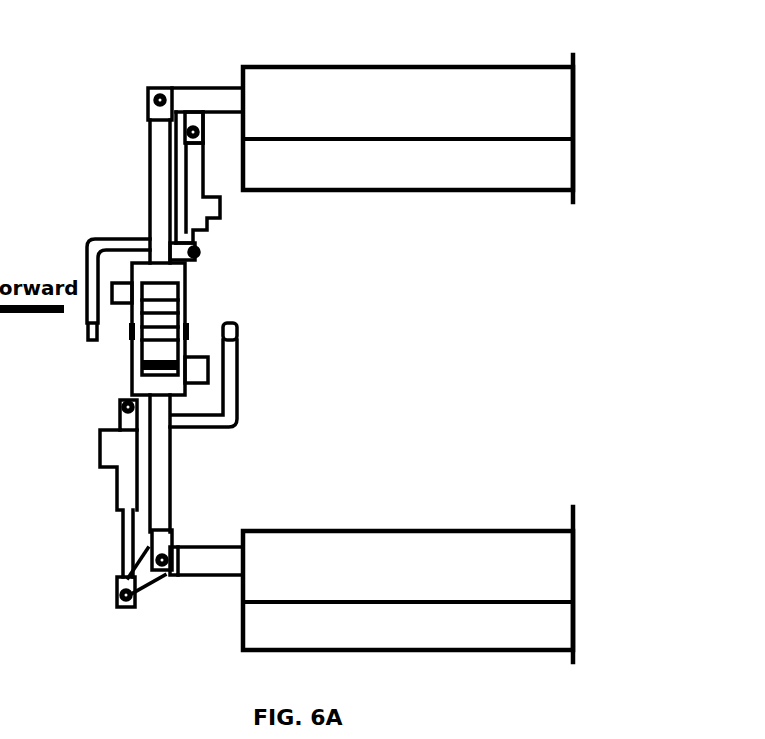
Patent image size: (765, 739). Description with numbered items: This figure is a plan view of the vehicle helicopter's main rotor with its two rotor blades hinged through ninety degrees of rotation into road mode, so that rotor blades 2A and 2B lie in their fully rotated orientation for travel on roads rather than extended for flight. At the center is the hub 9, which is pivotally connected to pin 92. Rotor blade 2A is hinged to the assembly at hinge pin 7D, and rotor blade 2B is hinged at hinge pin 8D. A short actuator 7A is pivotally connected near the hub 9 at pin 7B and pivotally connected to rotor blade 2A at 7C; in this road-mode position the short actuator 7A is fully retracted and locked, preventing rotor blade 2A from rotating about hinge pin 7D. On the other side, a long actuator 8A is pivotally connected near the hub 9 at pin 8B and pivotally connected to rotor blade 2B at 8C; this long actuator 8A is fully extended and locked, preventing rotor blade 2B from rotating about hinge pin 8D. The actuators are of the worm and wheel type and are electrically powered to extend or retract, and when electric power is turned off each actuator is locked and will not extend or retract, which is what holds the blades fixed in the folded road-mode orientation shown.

The rotor blade 2A is at (477, 190).
The rotor blade 2B is at (482, 531).
The short actuator 7A is at (203, 182).
The pin 7B is at (198, 254).
The pivot connection 7C is at (190, 134).
The hinge pin 7D is at (150, 90).
The long actuator 8A is at (115, 492).
The pin 8B is at (123, 408).
The pivot connection 8C is at (122, 594).
The hinge pin 8D is at (167, 570).
The hub 9 is at (183, 297).
The pin 92 is at (105, 364).